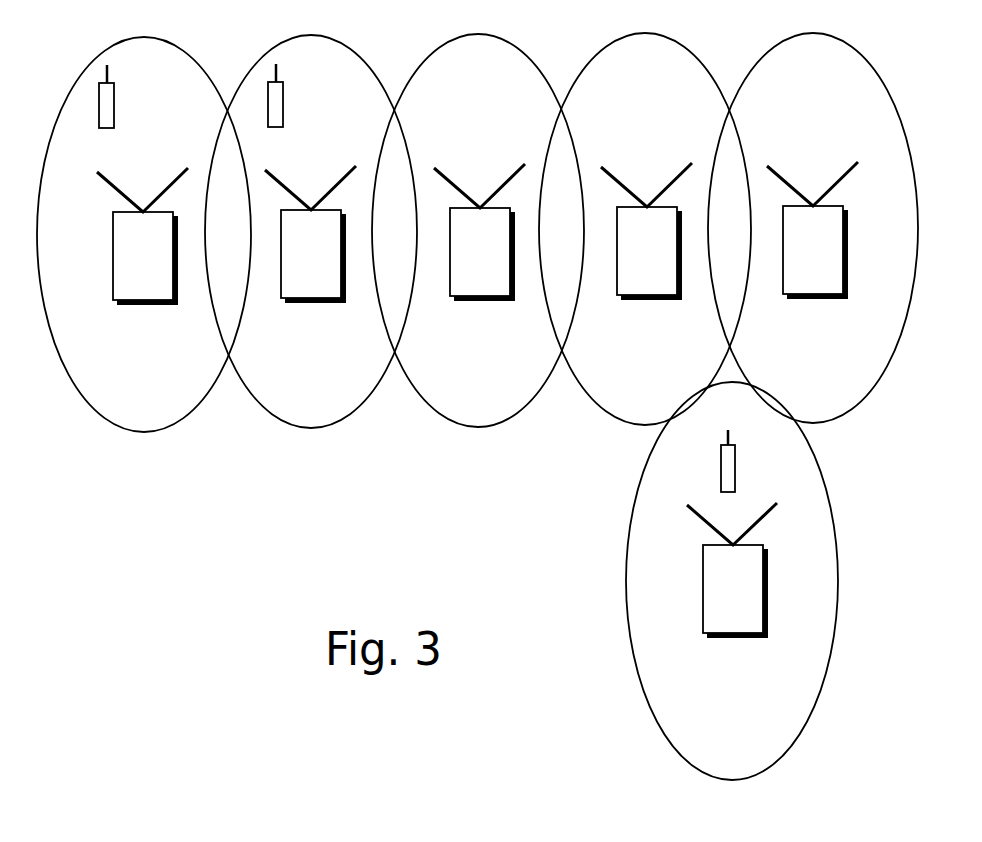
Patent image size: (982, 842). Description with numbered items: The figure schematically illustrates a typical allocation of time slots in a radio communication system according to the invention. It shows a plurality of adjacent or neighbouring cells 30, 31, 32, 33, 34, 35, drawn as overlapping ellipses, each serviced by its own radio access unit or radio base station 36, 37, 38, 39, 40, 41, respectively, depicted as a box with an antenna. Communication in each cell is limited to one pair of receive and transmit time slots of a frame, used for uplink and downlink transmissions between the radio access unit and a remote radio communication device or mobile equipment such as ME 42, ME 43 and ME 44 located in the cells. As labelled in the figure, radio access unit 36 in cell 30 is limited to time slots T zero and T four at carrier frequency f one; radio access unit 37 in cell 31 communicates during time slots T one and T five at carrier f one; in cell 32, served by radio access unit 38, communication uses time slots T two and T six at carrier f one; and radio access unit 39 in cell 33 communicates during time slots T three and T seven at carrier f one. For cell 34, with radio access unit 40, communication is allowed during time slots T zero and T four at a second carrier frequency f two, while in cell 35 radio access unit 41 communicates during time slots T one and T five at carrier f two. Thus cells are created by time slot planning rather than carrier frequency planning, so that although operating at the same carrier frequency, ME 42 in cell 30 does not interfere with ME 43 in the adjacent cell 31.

The cell 30 is at (135, 422).
The cell 31 is at (302, 421).
The cell 32 is at (473, 420).
The cell 33 is at (640, 419).
The cell 34 is at (828, 418).
The cell 35 is at (793, 732).
The radio access unit 36 is at (128, 292).
The radio access unit 37 is at (296, 290).
The radio access unit 38 is at (465, 288).
The radio access unit 39 is at (632, 287).
The radio access unit 40 is at (798, 286).
The radio access unit 41 is at (710, 632).
The remote radio communication device 42 is at (109, 102).
The remote radio communication device 43 is at (279, 100).
The remote radio communication device 44 is at (730, 464).